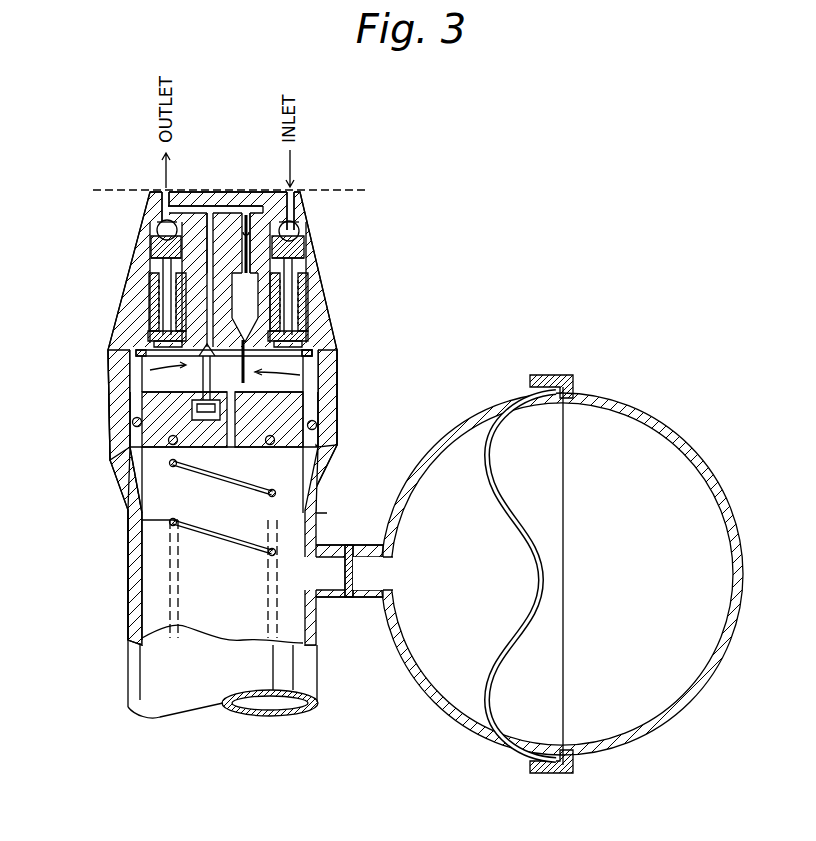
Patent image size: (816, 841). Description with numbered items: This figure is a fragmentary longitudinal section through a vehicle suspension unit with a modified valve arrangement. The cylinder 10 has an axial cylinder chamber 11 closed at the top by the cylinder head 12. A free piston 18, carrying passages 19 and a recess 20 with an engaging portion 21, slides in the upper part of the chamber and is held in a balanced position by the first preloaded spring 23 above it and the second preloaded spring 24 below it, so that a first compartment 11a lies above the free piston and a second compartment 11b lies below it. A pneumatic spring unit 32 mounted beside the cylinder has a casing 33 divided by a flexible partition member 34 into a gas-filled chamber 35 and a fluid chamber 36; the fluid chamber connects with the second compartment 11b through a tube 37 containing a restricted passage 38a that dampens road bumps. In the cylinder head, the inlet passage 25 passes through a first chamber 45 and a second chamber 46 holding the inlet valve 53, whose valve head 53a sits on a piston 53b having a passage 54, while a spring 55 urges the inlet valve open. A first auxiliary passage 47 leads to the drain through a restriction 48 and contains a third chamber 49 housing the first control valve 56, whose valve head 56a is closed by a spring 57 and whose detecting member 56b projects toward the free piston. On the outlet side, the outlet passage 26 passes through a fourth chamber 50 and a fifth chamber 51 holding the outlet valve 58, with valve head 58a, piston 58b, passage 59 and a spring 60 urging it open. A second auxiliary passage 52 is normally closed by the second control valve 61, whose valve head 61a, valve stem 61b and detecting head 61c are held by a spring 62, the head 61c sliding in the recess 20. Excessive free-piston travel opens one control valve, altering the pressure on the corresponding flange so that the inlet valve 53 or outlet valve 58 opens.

The cylinder 10 is at (120, 591).
The cylinder bore or chamber 11 is at (143, 581).
The first compartment 11a is at (160, 385).
The second compartment 11b is at (130, 500).
The cylinder head 12 is at (320, 232).
The free piston 18 is at (150, 450).
The passages 19 is at (240, 448).
The recess 20 is at (178, 468).
The engaging portion 21 is at (132, 422).
The first preloaded spring 23 is at (168, 442).
The second preloaded spring 24 is at (172, 525).
The inlet passage 25 is at (292, 190).
The outlet passage 26 is at (163, 190).
The pneumatic spring unit 32 is at (608, 387).
The casing 33 is at (672, 430).
The flexible partition member 34 is at (525, 500).
The chamber 35 is at (631, 580).
The chamber 36 is at (413, 580).
The tube 37 is at (355, 545).
The restricted passage 38a is at (349, 580).
The first chamber 45 is at (299, 240).
The second chamber 46 is at (308, 305).
The first auxiliary passage 47 is at (244, 228).
The restriction 48 is at (252, 225).
The third chamber 49 is at (214, 210).
The fourth chamber 50 is at (158, 234).
The fifth chamber 51 is at (148, 322).
The second auxiliary passage 52 is at (154, 344).
The inlet valve 53 is at (306, 252).
The valve head 53a is at (300, 218).
The piston 53b is at (304, 265).
The passage 54 is at (306, 290).
The spring 55 is at (308, 334).
The first control valve 56 is at (300, 393).
The valve head 56a is at (305, 380).
The detecting member or sensor 56b is at (305, 410).
The spring 57 is at (312, 355).
The outlet valve 58 is at (151, 248).
The valve head 58a is at (158, 226).
The piston 58b is at (151, 260).
The passage 59 is at (163, 280).
The spring 60 is at (149, 300).
The second control valve 61 is at (136, 353).
The valve head 61a is at (142, 366).
The valve stem 61b is at (142, 408).
The detecting member or head 61c is at (128, 455).
The spring 62 is at (206, 420).